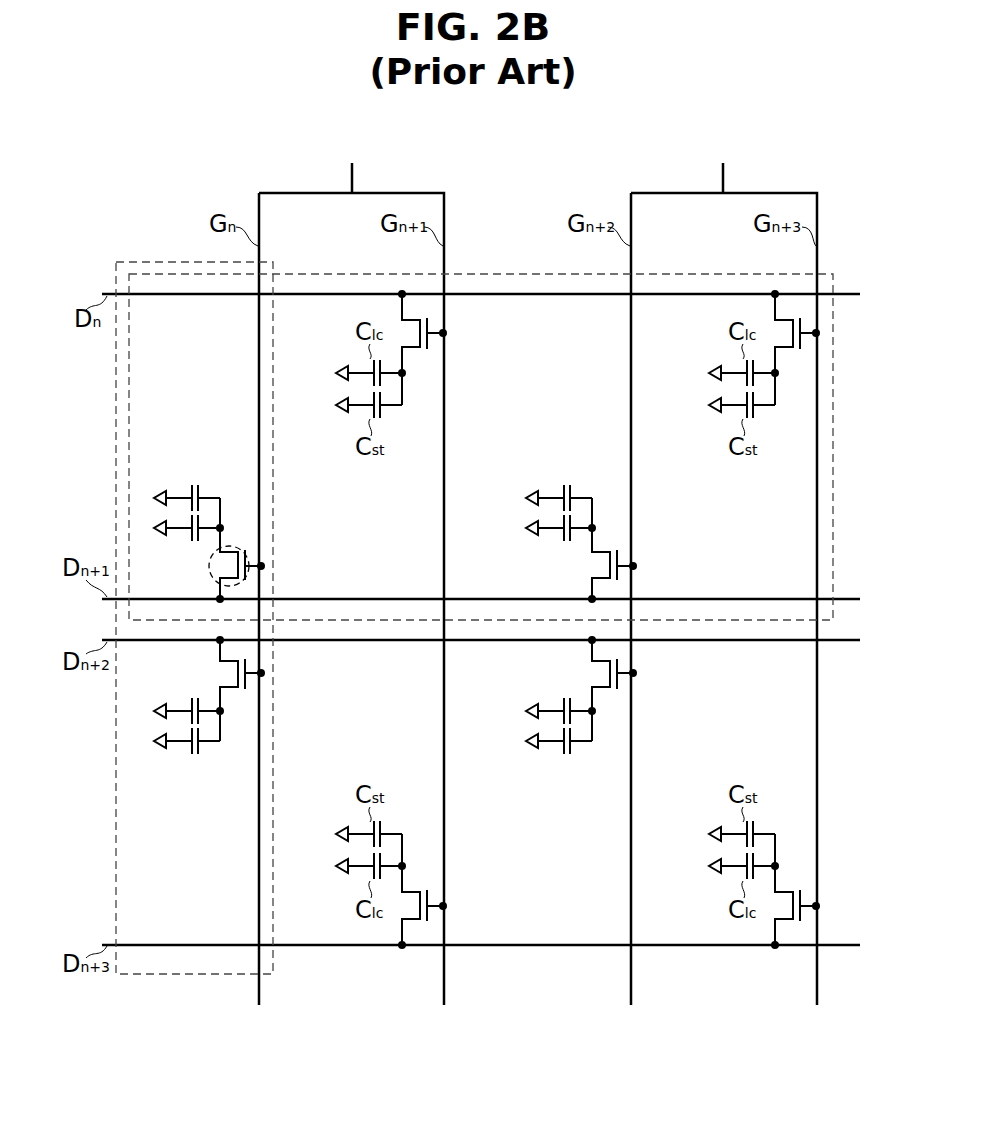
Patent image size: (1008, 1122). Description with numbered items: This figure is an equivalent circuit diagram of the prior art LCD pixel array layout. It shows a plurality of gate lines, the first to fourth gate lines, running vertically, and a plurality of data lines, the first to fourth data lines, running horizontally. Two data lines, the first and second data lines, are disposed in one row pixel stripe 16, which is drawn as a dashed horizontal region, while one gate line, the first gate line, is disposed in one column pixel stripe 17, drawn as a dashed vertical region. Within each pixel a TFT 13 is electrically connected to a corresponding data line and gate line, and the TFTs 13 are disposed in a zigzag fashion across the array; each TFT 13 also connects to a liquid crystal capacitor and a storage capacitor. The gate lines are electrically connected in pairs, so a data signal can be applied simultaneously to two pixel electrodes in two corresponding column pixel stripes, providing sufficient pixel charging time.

The TFT 13 is at (237, 548).
The row pixel stripe 16 is at (833, 414).
The column pixel stripe 17 is at (188, 975).